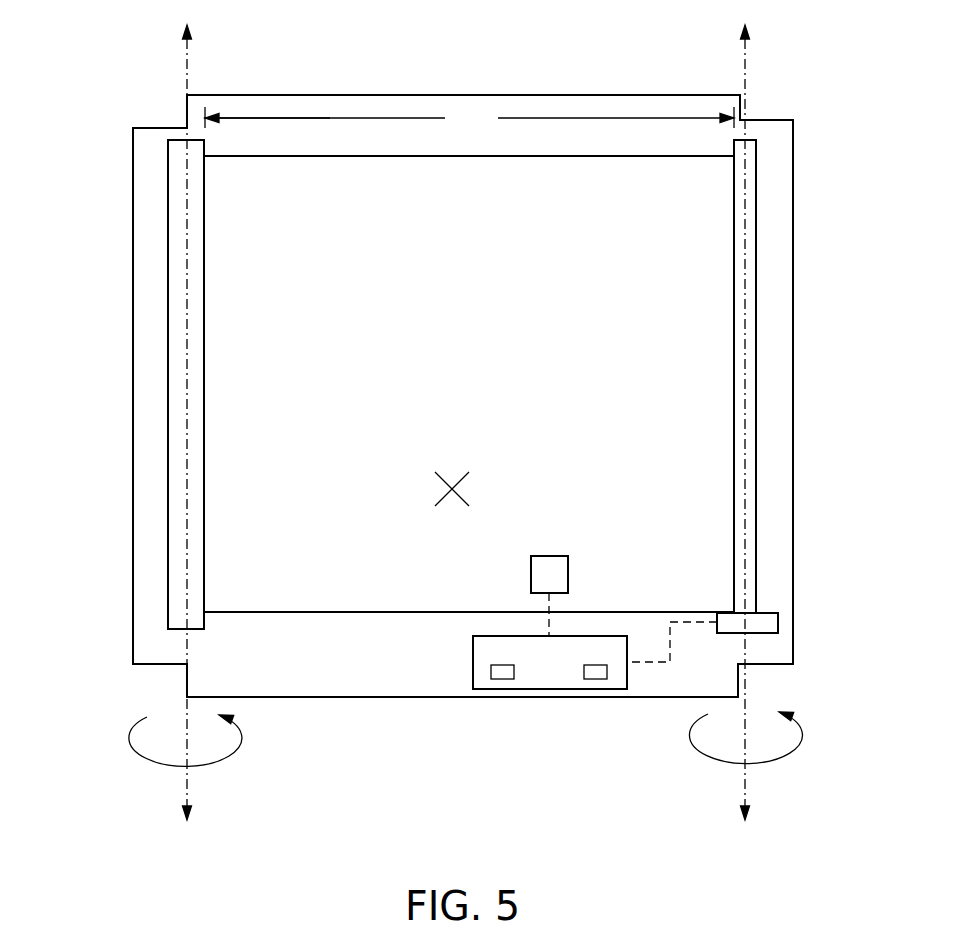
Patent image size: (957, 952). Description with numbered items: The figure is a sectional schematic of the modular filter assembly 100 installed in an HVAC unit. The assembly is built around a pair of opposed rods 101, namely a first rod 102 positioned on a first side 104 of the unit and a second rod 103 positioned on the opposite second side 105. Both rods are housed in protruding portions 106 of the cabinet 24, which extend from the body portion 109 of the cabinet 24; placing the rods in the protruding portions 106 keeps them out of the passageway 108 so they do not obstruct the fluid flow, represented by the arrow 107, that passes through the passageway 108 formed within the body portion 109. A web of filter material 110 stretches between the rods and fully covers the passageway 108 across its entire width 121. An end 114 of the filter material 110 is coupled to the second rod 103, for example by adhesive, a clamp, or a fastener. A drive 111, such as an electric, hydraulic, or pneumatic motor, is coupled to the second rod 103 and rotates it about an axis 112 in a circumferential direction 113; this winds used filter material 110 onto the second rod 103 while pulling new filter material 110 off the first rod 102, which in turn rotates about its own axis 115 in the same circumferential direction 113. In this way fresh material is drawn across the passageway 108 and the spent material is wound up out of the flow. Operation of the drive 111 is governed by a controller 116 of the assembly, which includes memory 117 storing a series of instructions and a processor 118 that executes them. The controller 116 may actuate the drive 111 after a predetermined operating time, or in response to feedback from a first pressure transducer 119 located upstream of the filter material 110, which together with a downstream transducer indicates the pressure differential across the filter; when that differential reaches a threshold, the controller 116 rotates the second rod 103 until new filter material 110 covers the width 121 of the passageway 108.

The cabinet 24 is at (400, 95).
The modular filter assembly 100 is at (678, 148).
The pair of opposed rods 101 is at (157, 597).
The first rod 102 is at (177, 157).
The second rod 103 is at (756, 312).
The first side 104 is at (118, 526).
The second side 105 is at (810, 575).
The protruding portions 106 is at (132, 182).
The arrow 107 is at (460, 494).
The passageway 108 is at (407, 578).
The body portion 109 is at (333, 113).
The filter material 110 is at (428, 156).
The drive 111 is at (765, 634).
The axis 112 is at (745, 783).
The circumferential direction 113 is at (145, 758).
The end 114 is at (727, 212).
The axis 115 is at (190, 783).
The controller 116 is at (497, 636).
The memory 117 is at (491, 670).
The processor 118 is at (584, 670).
The first pressure transducer 119 is at (568, 573).
The width 121 is at (469, 120).